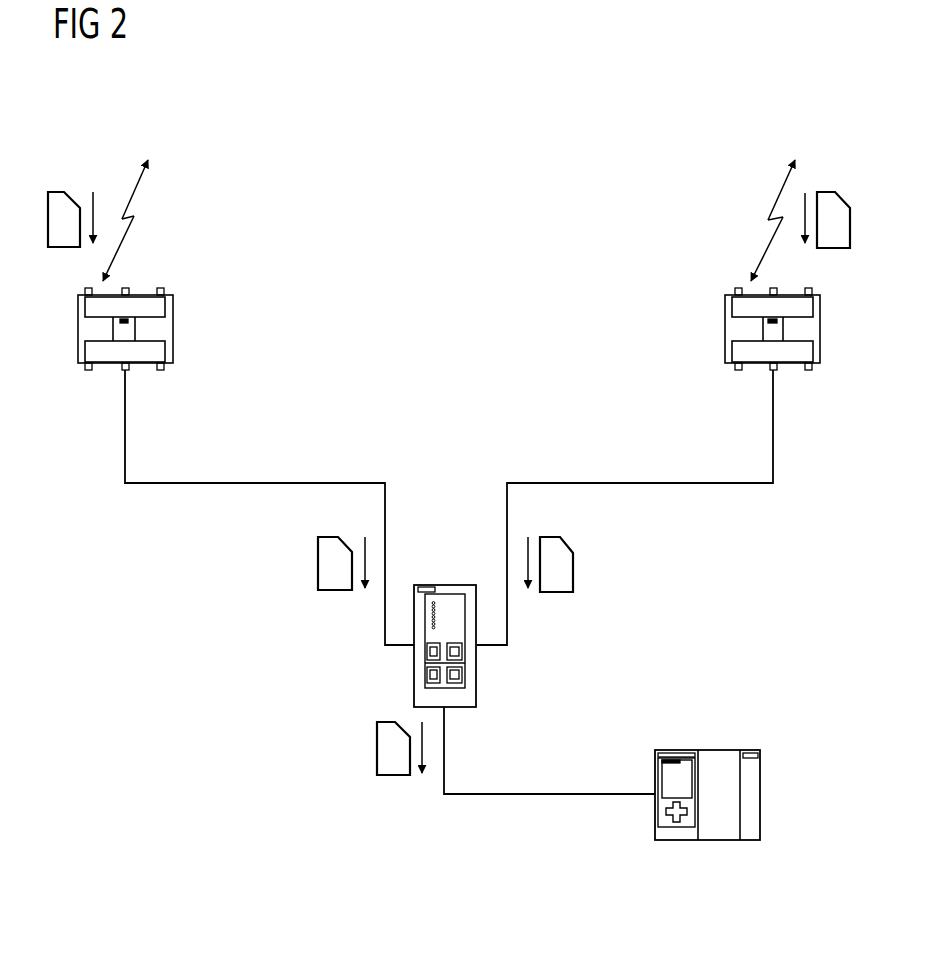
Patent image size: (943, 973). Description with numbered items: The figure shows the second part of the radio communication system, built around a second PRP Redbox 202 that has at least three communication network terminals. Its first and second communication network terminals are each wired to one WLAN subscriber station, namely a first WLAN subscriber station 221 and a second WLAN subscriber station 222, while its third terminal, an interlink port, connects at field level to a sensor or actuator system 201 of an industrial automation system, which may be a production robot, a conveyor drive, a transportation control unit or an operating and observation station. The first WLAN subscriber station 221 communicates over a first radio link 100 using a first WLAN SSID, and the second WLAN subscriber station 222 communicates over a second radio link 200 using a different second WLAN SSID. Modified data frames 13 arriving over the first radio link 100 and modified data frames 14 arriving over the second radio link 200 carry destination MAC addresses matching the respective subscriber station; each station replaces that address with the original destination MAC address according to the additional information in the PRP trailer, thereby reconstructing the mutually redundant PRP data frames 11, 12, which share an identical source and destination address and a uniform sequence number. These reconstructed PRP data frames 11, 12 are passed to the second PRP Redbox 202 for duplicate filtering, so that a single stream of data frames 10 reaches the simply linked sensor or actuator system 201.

The data frames 10 is at (377, 748).
The PRP data frame 11 is at (318, 567).
The PRP data frame 12 is at (575, 567).
The modified data frame 13 is at (49, 192).
The modified data frame 14 is at (818, 192).
The first radio link 100 is at (128, 238).
The second radio link 200 is at (773, 201).
The sensor or actuator system 201 is at (708, 750).
The second PRP Redbox 202 is at (477, 673).
The first WLAN subscriber station 221 is at (174, 330).
The second WLAN subscriber station 222 is at (725, 330).